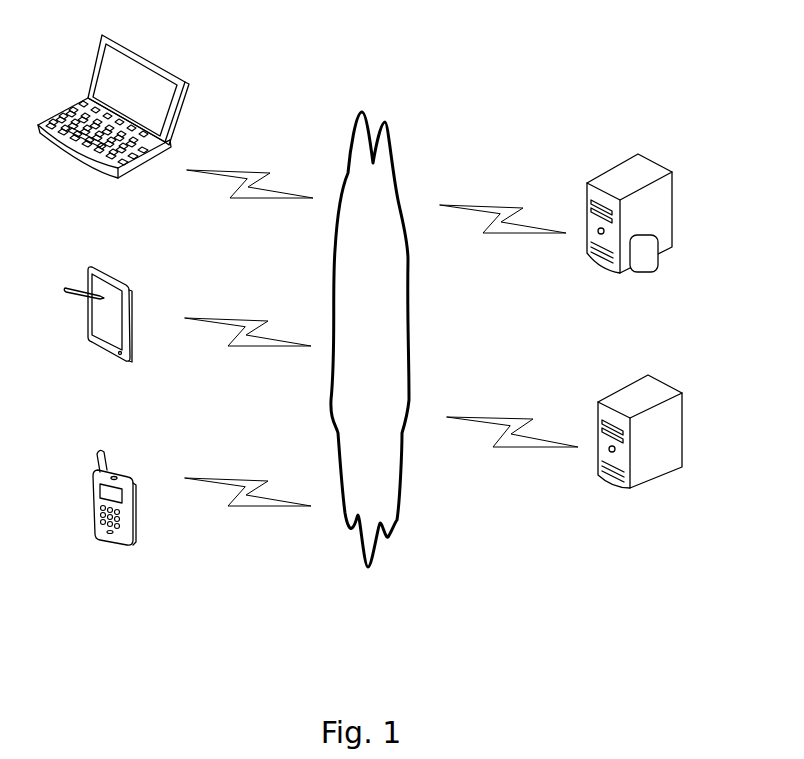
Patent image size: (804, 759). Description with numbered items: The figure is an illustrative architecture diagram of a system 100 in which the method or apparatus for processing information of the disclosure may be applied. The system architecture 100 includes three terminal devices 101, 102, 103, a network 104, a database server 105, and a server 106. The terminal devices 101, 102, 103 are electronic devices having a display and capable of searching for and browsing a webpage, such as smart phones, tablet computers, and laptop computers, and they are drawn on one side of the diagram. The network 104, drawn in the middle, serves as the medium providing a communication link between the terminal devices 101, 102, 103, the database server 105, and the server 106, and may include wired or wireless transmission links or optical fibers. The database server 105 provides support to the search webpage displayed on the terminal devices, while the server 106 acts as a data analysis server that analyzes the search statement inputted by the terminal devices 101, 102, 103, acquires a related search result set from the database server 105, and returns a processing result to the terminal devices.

The system architecture 100 is at (562, 28).
The terminal device 101 is at (114, 516).
The terminal device 102 is at (98, 332).
The terminal device 103 is at (113, 125).
The network 104 is at (370, 339).
The database server 105 is at (629, 237).
The server 106 is at (640, 453).